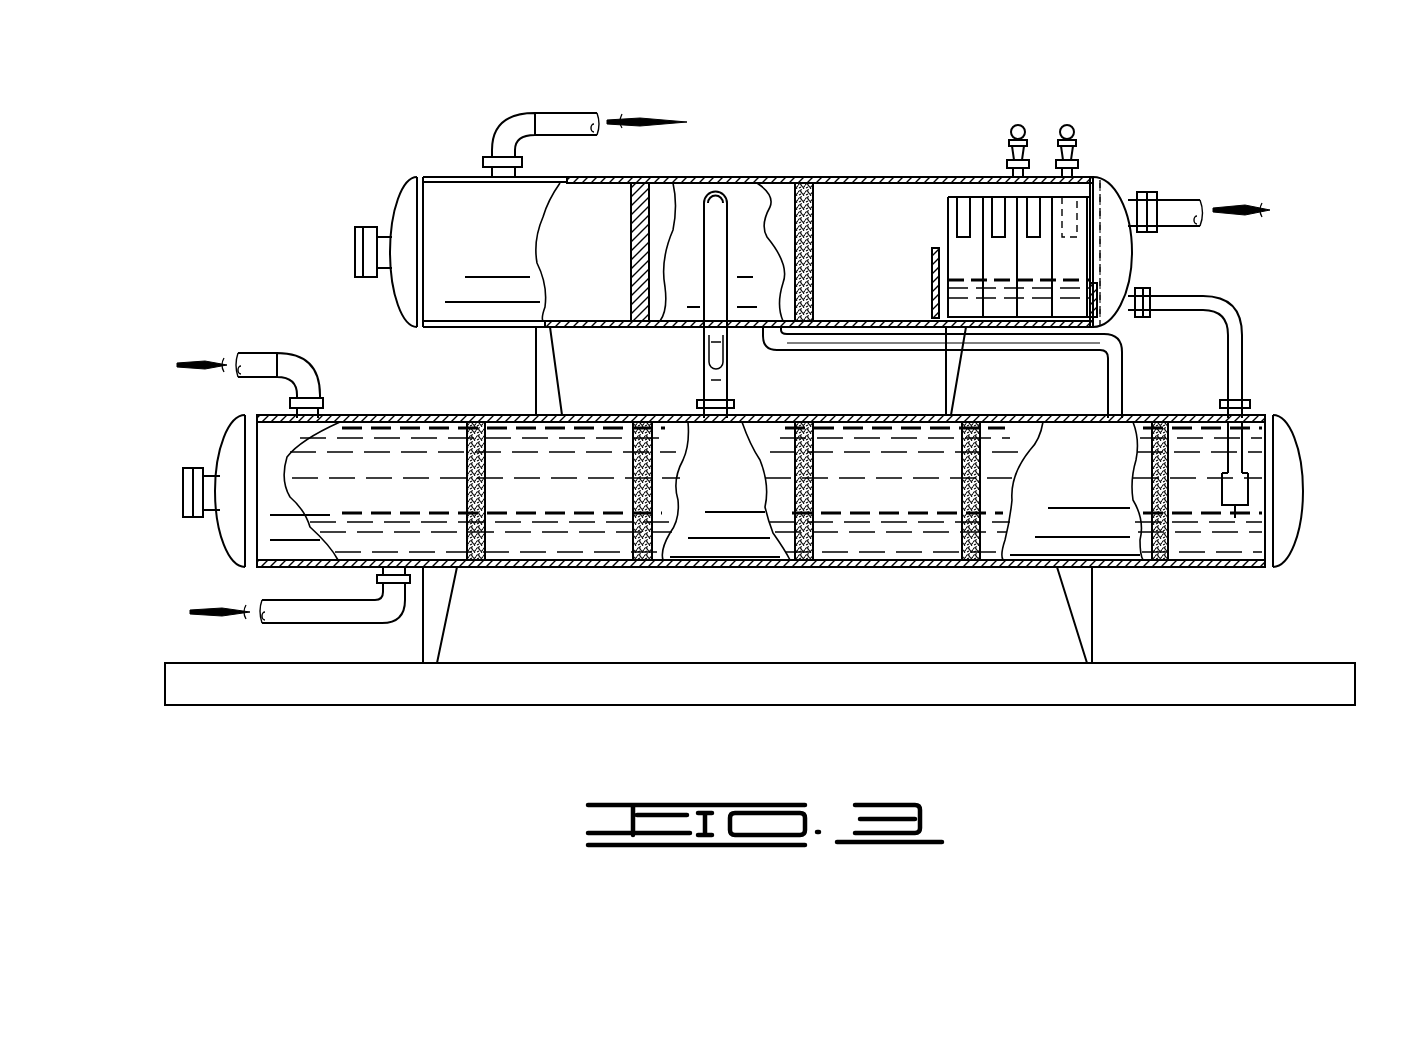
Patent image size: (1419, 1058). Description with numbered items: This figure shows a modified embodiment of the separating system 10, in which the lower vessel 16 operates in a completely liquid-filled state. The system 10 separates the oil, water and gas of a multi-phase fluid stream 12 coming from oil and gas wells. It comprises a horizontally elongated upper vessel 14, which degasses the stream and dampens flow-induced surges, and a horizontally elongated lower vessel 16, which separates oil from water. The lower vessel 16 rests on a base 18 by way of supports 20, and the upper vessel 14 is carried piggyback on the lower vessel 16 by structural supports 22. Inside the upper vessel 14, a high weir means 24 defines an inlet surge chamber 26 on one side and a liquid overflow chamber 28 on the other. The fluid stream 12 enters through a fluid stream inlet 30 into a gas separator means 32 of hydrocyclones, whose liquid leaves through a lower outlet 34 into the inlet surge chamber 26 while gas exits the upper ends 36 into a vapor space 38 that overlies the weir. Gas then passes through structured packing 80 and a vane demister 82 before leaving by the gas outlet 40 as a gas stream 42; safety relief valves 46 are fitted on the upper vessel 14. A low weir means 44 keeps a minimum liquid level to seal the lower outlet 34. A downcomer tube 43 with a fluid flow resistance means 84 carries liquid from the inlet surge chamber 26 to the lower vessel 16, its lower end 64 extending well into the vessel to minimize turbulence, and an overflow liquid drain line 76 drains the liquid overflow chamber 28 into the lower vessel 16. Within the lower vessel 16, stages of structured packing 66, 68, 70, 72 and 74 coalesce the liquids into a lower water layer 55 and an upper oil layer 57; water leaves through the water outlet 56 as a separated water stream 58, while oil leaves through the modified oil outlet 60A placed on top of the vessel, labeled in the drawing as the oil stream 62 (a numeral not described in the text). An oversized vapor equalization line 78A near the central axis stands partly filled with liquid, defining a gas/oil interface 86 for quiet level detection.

The separating system 10 is at (1105, 86).
The multi-phase fluid stream 12 is at (1266, 206).
The upper vessel 14 is at (447, 176).
The lower vessel 16 is at (366, 414).
The base 18 is at (1245, 672).
The supports 20 is at (432, 636).
The structural supports 22 is at (534, 340).
The high weir means 24 is at (931, 256).
The inlet surge chamber 26 is at (1011, 273).
The liquid overflow chamber 28 is at (609, 287).
The fluid stream inlet 30 is at (1148, 190).
The gas separator means 32 is at (1123, 270).
The lower outlet 34 is at (1083, 320).
The upper ends 36 is at (1075, 182).
The vapor space 38 is at (883, 221).
The gas outlet 40 is at (500, 126).
The gas stream 42 is at (622, 117).
The downcomer tube 43 is at (1236, 311).
The low weir means 44 is at (1103, 290).
The safety relief valves 46 is at (1067, 126).
The lower water layer 55 is at (900, 540).
The water outlet 56 is at (373, 620).
The upper oil layer 57 is at (906, 482).
The separated water stream 58 is at (250, 607).
The modified oil outlet 60A is at (310, 381).
The oil outlet 62 is at (228, 360).
The lower end 64 is at (1237, 518).
The structured packing 66 is at (1162, 563).
The structured packing 68 is at (975, 563).
The structured packing 70 is at (808, 562).
The structured packing 72 is at (643, 562).
The structured packing 74 is at (477, 562).
The overflow liquid drain line 76 is at (836, 352).
The oversized vapor equalization line 78A is at (754, 183).
The structured packing 80 is at (820, 183).
The vane demister 82 is at (641, 184).
The fluid flow resistance means 84 is at (1151, 300).
The gas/oil interface 86 is at (701, 342).